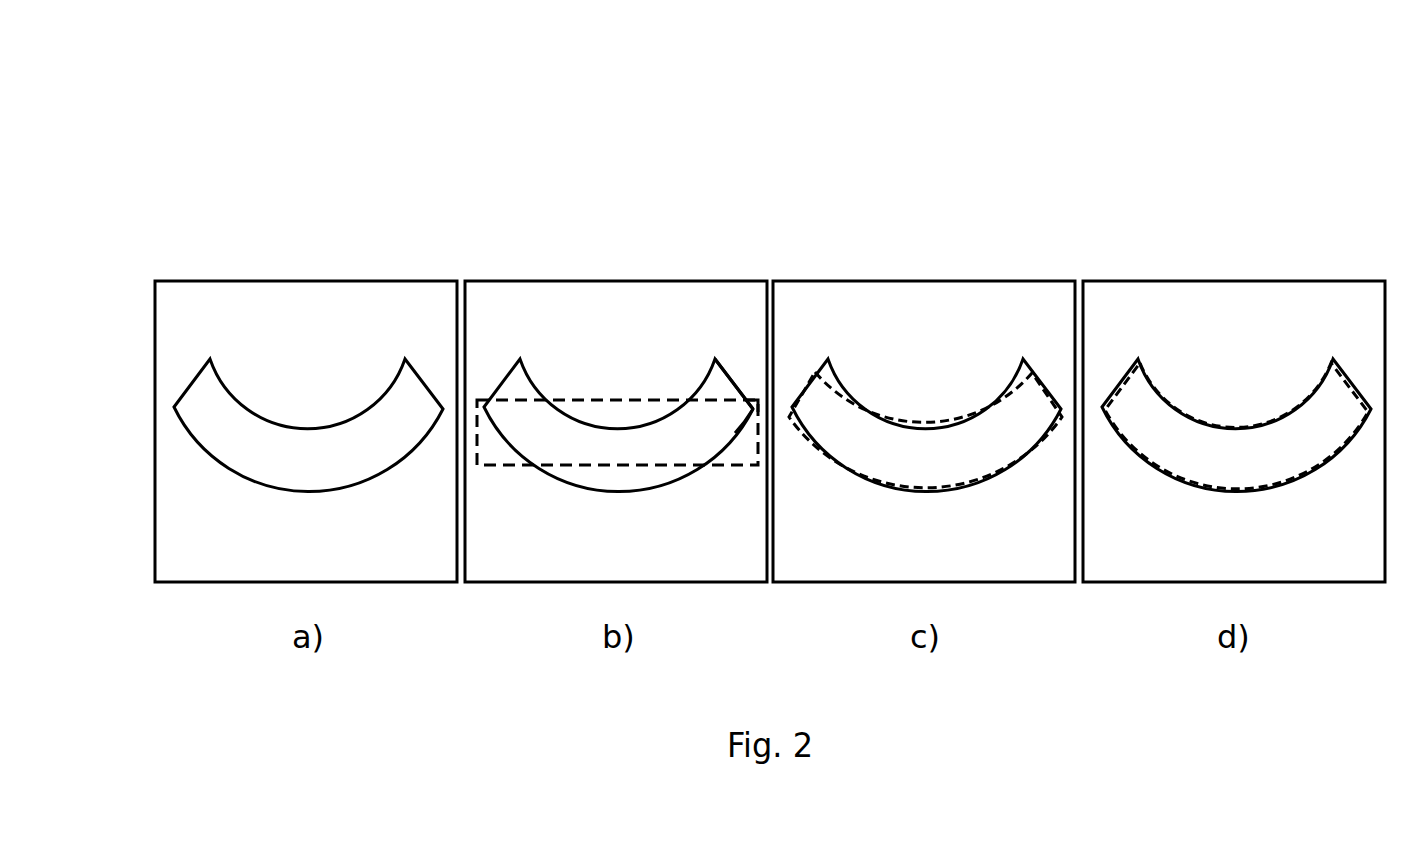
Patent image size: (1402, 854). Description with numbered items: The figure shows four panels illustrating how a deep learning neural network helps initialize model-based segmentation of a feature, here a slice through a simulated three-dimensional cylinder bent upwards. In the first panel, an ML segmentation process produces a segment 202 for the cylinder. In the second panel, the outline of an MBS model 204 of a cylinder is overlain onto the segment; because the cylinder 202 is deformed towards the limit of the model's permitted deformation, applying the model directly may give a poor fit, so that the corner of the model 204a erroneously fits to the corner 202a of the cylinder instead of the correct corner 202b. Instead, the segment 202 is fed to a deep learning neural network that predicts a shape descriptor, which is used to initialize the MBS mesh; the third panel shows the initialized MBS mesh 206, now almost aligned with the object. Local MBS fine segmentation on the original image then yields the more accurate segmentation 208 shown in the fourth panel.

The segment 202 is at (223, 417).
The corner of the cylinder 202a is at (750, 409).
The correct corner 202b is at (713, 359).
The MBS model 204 is at (628, 400).
The corner of the model 204a is at (758, 401).
The initialized MBS mesh 206 is at (1023, 378).
The more accurate segmentation 208 is at (1150, 380).